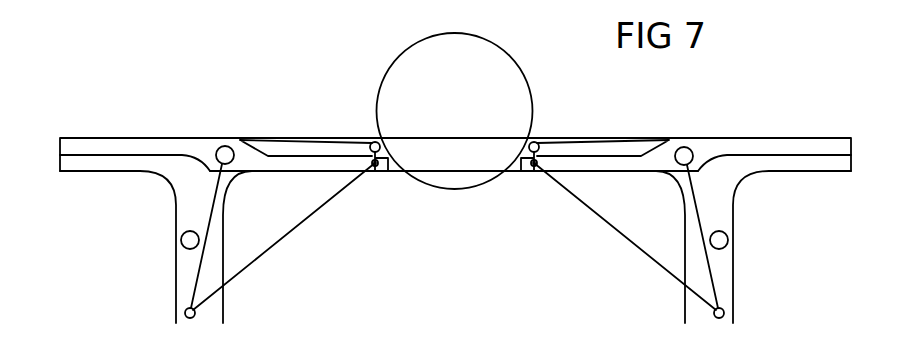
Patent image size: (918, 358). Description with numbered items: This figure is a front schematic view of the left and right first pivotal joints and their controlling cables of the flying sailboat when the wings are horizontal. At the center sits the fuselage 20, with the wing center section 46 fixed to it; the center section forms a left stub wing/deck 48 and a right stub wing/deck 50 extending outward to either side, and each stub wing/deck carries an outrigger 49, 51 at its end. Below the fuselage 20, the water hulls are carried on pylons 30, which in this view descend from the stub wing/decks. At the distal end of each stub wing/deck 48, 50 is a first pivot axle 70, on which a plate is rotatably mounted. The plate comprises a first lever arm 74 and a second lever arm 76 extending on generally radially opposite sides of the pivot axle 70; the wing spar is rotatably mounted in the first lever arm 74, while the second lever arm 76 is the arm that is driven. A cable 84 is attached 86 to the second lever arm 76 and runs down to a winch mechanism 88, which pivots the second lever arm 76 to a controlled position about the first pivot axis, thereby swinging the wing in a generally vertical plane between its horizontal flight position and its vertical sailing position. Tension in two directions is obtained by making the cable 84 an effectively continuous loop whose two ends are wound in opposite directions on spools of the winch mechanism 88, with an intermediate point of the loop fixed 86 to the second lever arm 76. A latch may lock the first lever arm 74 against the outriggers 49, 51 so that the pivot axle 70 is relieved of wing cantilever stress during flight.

The fuselage 20 is at (465, 118).
The pylons 30 is at (174, 278).
The wing center section 46 is at (453, 158).
The left stub wing/deck 48 is at (603, 137).
The left outrigger 49 is at (813, 168).
The right stub wing/deck 50 is at (300, 137).
The right outrigger 51 is at (88, 167).
The first pivot axle 70 is at (227, 148).
The first lever arm 74 is at (97, 138).
The second lever arm 76 is at (320, 167).
The cable 84 is at (257, 264).
The cable attachment 86 is at (385, 174).
The winch mechanism 88 is at (180, 240).